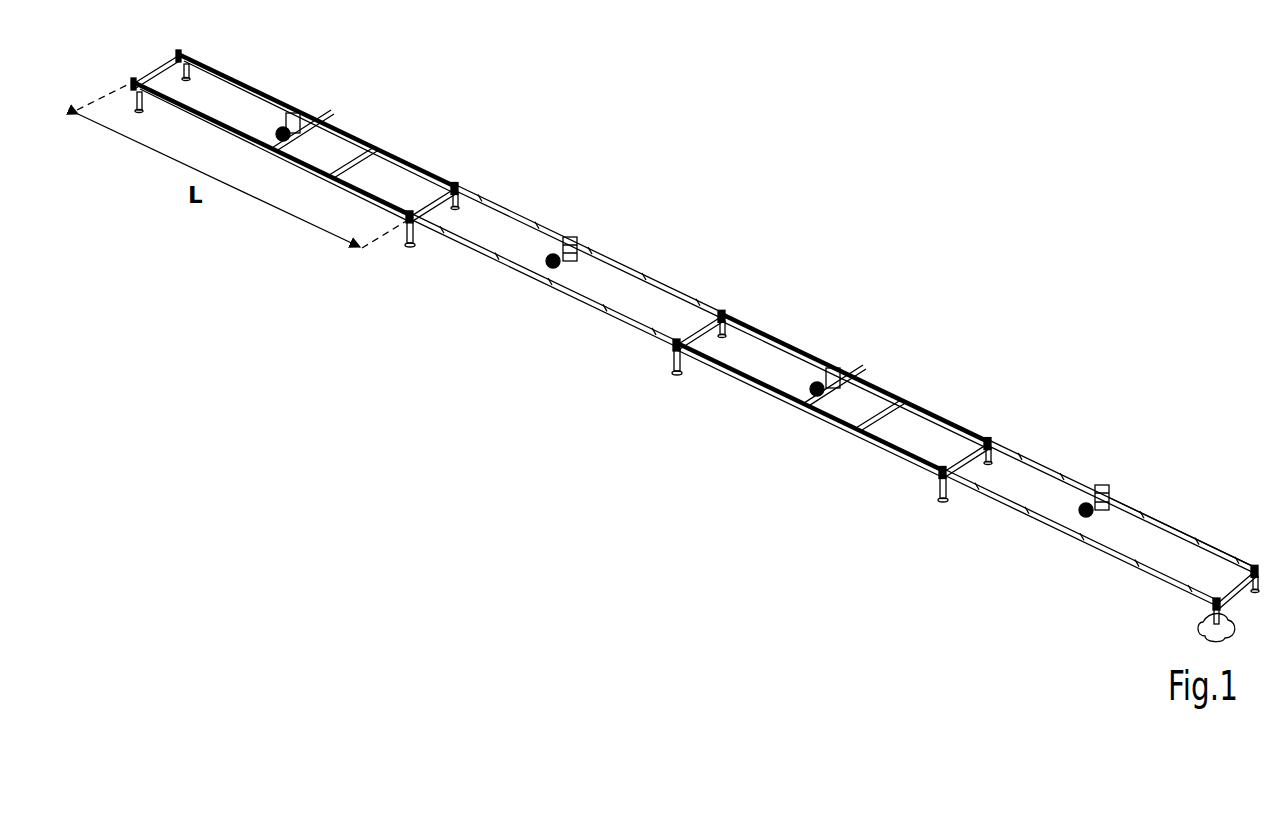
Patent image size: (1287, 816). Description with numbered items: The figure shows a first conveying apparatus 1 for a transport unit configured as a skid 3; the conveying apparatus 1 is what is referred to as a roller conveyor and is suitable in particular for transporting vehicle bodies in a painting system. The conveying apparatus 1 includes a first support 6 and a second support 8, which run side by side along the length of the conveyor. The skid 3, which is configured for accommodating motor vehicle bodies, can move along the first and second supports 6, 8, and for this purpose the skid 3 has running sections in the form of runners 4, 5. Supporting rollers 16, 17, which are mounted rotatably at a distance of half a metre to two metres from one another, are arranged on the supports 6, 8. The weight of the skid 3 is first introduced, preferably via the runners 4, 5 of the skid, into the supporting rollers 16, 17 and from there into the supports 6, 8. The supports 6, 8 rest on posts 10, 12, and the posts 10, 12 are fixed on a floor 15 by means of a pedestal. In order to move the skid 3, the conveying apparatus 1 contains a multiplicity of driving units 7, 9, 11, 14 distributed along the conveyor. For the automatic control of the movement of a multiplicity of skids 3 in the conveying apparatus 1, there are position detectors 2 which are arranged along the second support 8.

The conveying apparatus 1 is at (742, 114).
The position detectors 2 is at (453, 182).
The skid 3 is at (313, 115).
The runner 4 is at (258, 147).
The runner 5 is at (262, 87).
The first support 6 is at (180, 113).
The driving unit 7 is at (309, 100).
The second support 8 is at (1160, 519).
The driving unit 9 is at (582, 218).
The post 10 is at (406, 242).
The driving unit 11 is at (851, 354).
The post 12 is at (463, 196).
The driving unit 14 is at (1117, 475).
The floor 15 is at (1203, 627).
The supporting rollers 16 is at (540, 211).
The supporting rollers 17 is at (478, 267).